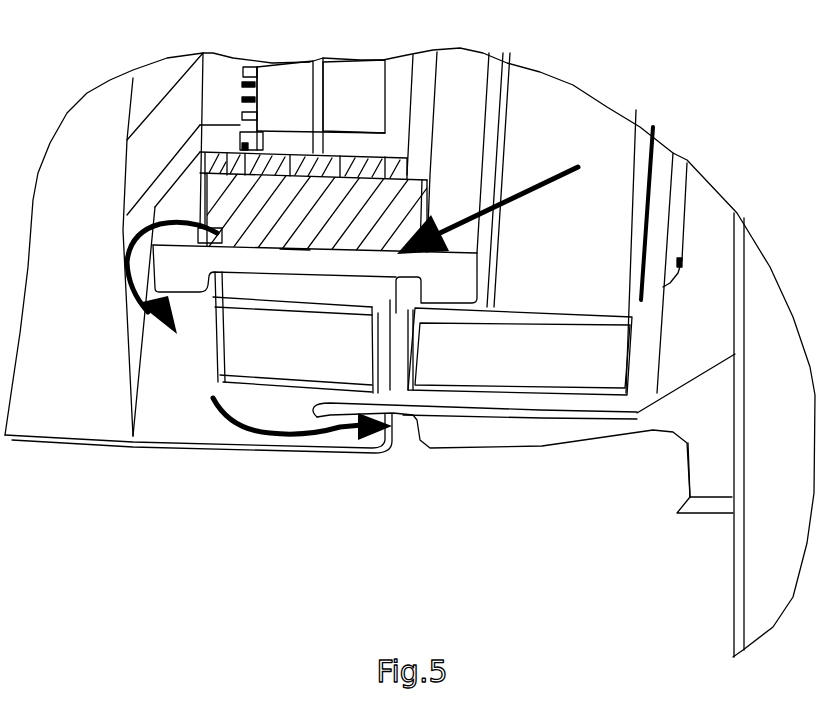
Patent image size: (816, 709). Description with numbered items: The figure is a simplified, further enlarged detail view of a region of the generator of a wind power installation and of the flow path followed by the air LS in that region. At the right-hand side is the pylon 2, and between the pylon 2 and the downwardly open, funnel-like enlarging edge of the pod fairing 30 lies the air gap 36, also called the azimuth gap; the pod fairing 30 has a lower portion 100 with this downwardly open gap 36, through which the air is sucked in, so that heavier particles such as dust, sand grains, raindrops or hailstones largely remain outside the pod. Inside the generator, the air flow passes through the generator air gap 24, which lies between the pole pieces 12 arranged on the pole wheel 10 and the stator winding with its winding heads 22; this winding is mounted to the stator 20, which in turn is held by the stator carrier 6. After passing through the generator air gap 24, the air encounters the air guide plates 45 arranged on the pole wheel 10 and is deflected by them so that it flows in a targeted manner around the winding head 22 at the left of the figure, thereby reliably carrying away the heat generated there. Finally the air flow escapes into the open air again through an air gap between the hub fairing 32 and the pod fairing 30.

The pylon 2 is at (763, 490).
The stator carrier 6 is at (557, 234).
The pole wheel 10 is at (321, 105).
The pole pieces 12 is at (384, 221).
The air LS is at (548, 175).
The stator 20 is at (283, 355).
The winding heads 22 is at (172, 278).
The generator air gap 24 is at (291, 252).
The pod fairing 30 is at (542, 447).
The hub fairing 32 is at (245, 452).
The air gap 36 is at (720, 483).
The air guide plates 45 is at (160, 78).
The lower portion 100 is at (687, 477).